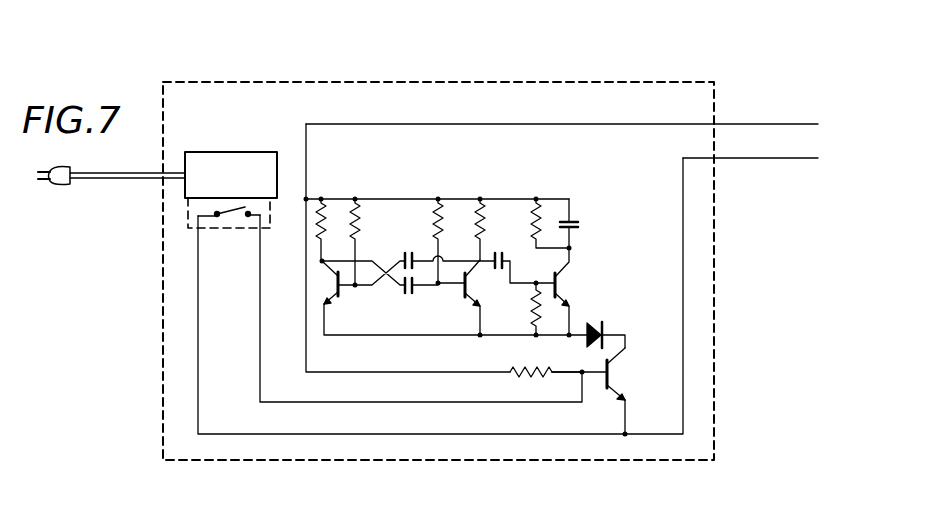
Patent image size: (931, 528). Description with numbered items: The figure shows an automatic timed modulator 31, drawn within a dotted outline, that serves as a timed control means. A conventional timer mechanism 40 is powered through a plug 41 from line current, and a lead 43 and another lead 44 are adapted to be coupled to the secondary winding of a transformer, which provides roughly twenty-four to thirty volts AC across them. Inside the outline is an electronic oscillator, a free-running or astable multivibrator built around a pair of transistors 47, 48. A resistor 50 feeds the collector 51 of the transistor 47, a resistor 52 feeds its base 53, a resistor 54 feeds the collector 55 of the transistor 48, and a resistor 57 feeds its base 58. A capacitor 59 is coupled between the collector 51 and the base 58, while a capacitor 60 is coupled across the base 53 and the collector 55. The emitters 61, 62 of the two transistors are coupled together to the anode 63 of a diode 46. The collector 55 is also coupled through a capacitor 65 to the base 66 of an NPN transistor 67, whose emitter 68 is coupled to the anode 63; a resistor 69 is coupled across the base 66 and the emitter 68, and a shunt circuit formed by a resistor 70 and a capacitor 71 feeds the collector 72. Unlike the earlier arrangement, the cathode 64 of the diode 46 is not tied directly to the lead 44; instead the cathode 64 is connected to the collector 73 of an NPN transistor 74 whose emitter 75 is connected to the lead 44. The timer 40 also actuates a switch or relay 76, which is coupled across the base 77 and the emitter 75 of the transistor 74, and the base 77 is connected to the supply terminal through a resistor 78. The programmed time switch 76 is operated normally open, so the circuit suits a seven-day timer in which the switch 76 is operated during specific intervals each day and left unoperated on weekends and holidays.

The automatic timed modulator 31 is at (684, 82).
The timer mechanism 40 is at (200, 152).
The plug 41 is at (66, 164).
The lead 43 is at (738, 123).
The lead 44 is at (740, 158).
The diode 46 is at (620, 322).
The transistor 47 is at (324, 295).
The transistor 48 is at (465, 284).
The resistor 50 is at (326, 210).
The collector 51 is at (318, 264).
The resistor 52 is at (362, 215).
The base 53 is at (339, 296).
The resistor 54 is at (486, 214).
The collector 55 is at (473, 266).
The resistor 57 is at (443, 213).
The base 58 is at (455, 285).
The capacitor 59 is at (406, 294).
The capacitor 60 is at (404, 258).
The emitter 61 is at (330, 306).
The emitter 62 is at (497, 295).
The anode 63 is at (581, 366).
The cathode 64 is at (603, 324).
The capacitor 65 is at (497, 252).
The base 66 is at (552, 280).
The transistor 67 is at (568, 290).
The emitter 68 is at (589, 291).
The resistor 69 is at (533, 314).
The resistor 70 is at (538, 206).
The capacitor 71 is at (578, 222).
The collector 72 is at (571, 266).
The collector 73 is at (621, 358).
The transistor 74 is at (622, 383).
The emitter 75 is at (642, 383).
The switch 76 is at (218, 216).
The base 77 is at (600, 371).
The resistor 78 is at (512, 367).